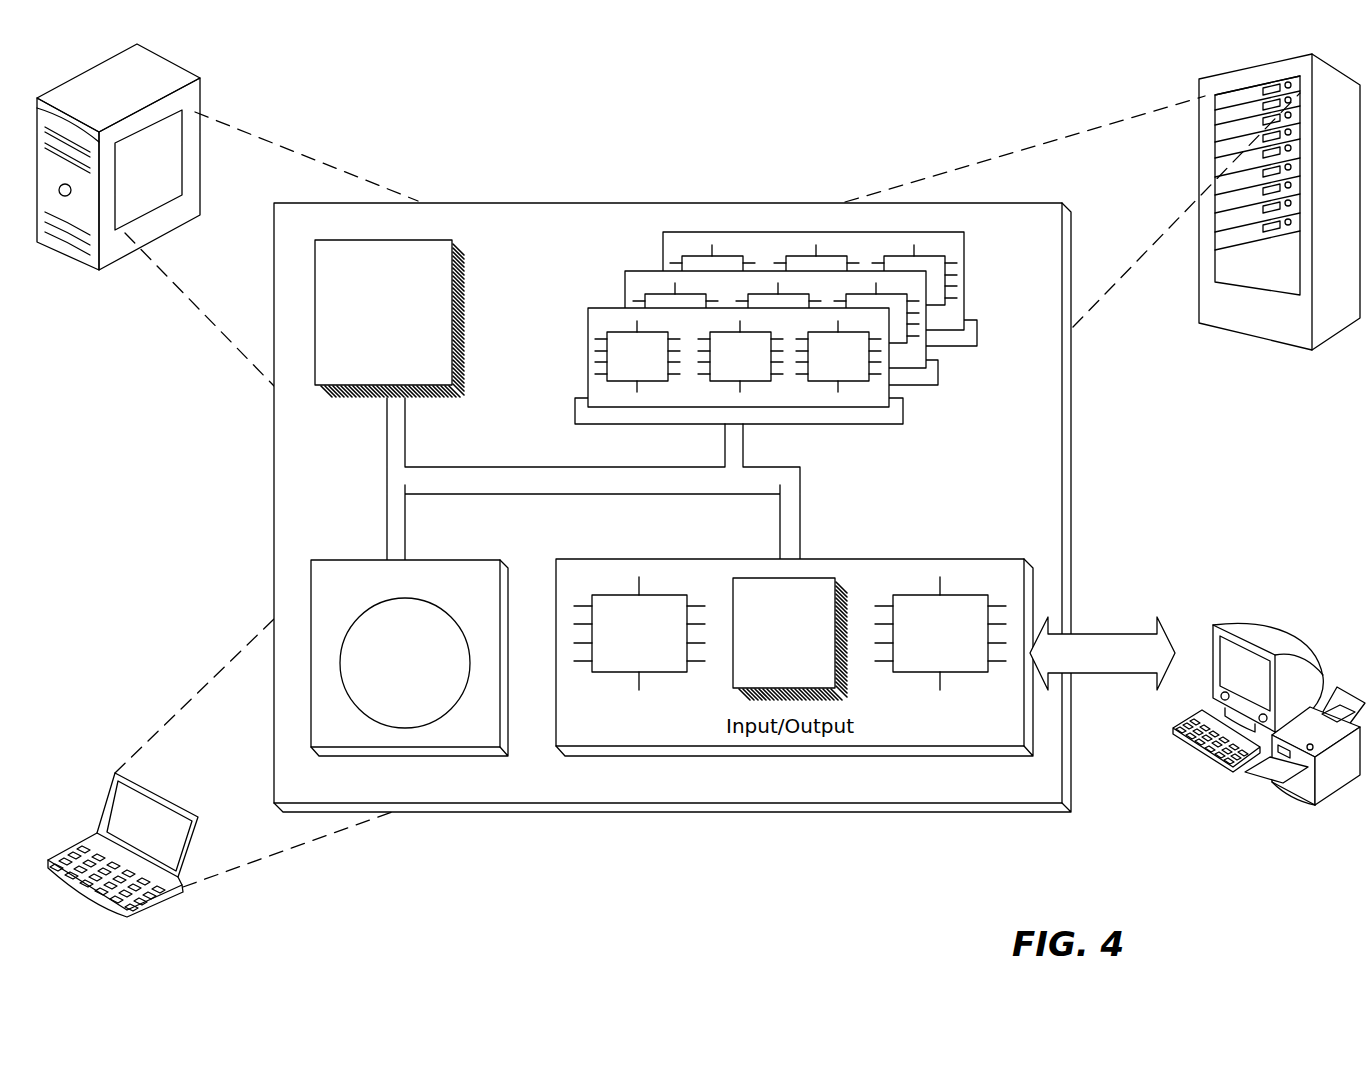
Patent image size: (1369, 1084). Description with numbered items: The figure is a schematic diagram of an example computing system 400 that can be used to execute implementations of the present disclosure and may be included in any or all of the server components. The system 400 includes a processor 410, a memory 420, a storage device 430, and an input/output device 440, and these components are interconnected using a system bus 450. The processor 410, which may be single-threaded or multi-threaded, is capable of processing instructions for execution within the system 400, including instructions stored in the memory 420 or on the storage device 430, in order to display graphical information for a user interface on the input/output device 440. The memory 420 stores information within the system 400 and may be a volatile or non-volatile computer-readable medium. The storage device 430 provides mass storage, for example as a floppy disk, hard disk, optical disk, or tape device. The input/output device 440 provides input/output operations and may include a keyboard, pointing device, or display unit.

The computing system 400 is at (483, 122).
The processor 410 is at (442, 375).
The memory 420 is at (969, 382).
The storage device 430 is at (490, 741).
The input/output device 440 is at (1213, 628).
The system bus 450 is at (590, 485).